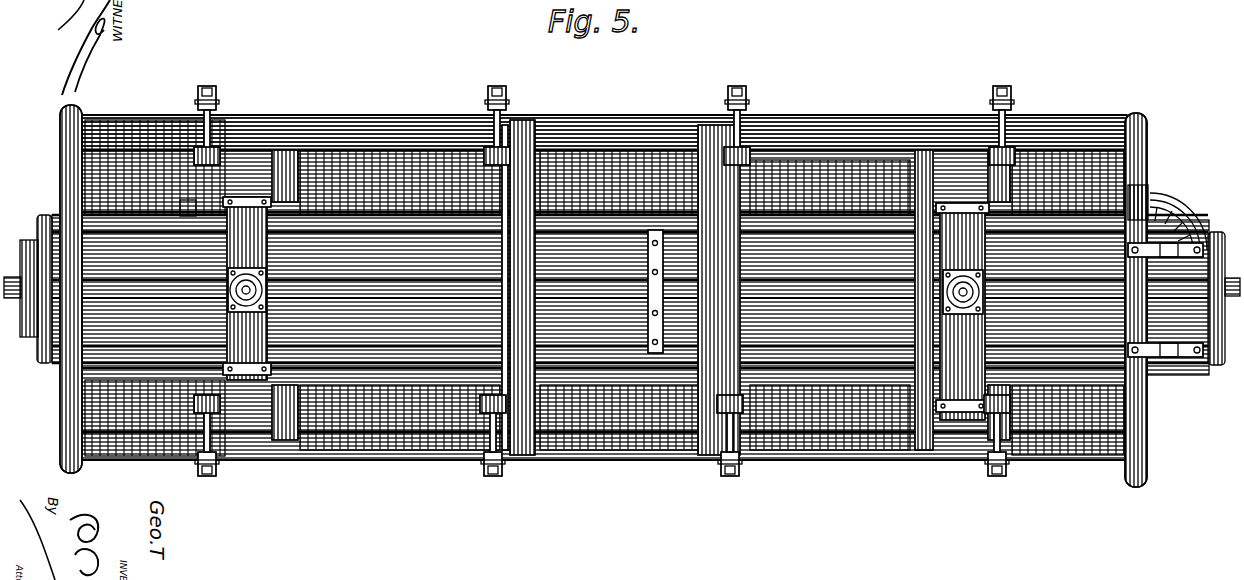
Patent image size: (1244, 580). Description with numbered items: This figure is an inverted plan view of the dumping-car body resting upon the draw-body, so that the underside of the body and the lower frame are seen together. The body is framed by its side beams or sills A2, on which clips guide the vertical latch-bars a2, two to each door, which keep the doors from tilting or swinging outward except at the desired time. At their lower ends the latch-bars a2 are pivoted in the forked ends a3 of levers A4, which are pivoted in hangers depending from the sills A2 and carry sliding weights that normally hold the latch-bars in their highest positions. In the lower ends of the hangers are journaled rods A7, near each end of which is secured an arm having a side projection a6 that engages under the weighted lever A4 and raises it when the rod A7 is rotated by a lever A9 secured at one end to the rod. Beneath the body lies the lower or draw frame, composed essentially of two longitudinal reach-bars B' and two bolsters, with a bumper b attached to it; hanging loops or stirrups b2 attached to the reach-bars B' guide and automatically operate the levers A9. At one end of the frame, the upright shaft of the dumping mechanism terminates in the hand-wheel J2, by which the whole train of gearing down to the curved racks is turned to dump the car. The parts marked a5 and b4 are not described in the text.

The side beams or sills A2 is at (868, 128).
The levers A4 is at (204, 175).
The rods A7 is at (808, 150).
The lever A9 is at (300, 165).
The vertical latch-bars a2 is at (212, 92).
The forked ends a3 is at (218, 104).
The guide block a5 is at (188, 209).
The side projection a6 is at (250, 160).
The longitudinal reach-bars B' is at (630, 293).
The bumper b is at (28, 289).
The hanging loops or stirrups b2 is at (1170, 243).
The end flange b4 is at (1212, 350).
The hand-wheel J2 is at (1192, 212).